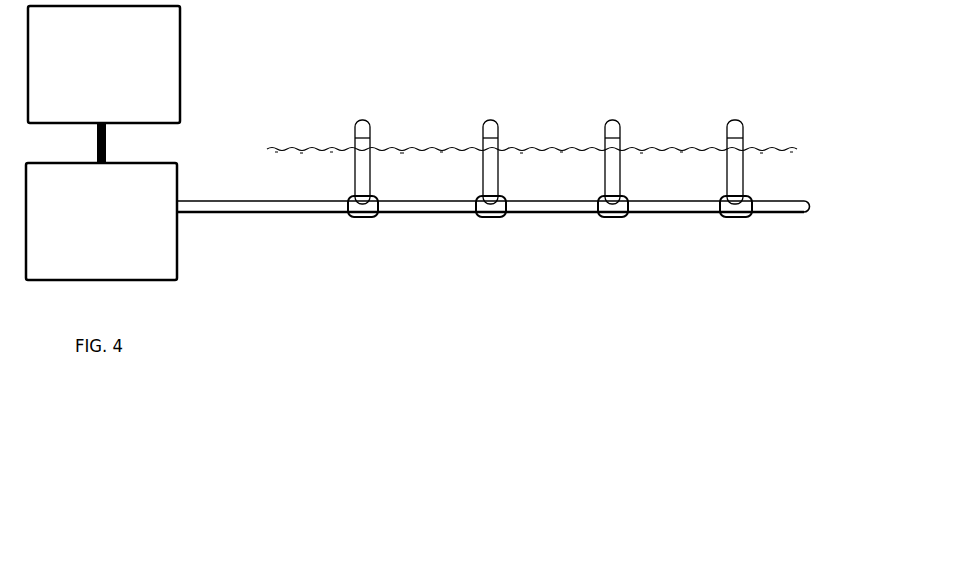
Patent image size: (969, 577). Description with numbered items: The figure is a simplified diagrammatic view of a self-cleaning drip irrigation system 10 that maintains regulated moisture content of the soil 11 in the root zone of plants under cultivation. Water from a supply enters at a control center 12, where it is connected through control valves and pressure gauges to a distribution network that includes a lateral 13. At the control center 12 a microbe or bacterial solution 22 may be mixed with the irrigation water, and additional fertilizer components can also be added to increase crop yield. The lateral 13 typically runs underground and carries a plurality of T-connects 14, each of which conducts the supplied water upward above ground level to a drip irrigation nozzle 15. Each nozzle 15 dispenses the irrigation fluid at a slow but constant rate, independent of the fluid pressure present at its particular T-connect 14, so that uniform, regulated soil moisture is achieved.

The drip irrigation system 10 is at (796, 134).
The soil 11 is at (650, 165).
The control center 12 is at (101, 221).
The lateral 13 is at (410, 208).
The T-connect 14 is at (360, 214).
The drip irrigation nozzle 15 is at (480, 128).
The microbe or bacterial solution 22 is at (104, 64).